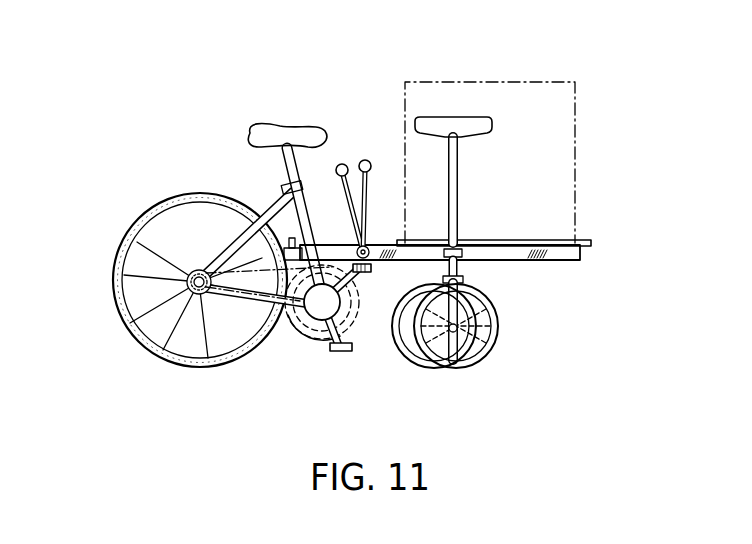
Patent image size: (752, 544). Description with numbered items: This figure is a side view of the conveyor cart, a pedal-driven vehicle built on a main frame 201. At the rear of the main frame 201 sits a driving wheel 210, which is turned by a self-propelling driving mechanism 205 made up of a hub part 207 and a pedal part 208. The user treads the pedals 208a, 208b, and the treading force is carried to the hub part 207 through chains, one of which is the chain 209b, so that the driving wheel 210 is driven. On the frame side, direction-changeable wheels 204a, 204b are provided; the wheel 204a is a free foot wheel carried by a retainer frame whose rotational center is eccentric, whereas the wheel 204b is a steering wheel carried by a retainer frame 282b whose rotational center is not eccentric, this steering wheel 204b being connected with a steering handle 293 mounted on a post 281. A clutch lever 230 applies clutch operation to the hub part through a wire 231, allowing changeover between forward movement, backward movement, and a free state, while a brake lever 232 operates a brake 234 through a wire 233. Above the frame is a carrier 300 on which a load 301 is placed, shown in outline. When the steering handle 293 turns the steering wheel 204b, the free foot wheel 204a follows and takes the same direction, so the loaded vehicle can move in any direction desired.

The main frame 201 is at (548, 262).
The free foot wheel 204a is at (425, 364).
The steering wheel 204b is at (494, 346).
The driving mechanism 205 is at (252, 312).
The hub part 207 is at (192, 256).
The pedal part 208 is at (307, 346).
The pedal 208a is at (344, 352).
The pedal 208b is at (372, 273).
The chain 209b is at (200, 295).
The driving wheel 210 is at (125, 258).
The clutch lever 230 is at (368, 162).
The wire 231 is at (230, 293).
The brake lever 232 is at (349, 165).
The wire 233 is at (266, 206).
The brake 234 is at (255, 208).
The steering post 281 is at (471, 168).
The retainer frame 282b is at (455, 305).
The steering handle 293 is at (470, 120).
The carrier 300 is at (576, 239).
The load 301 is at (563, 103).